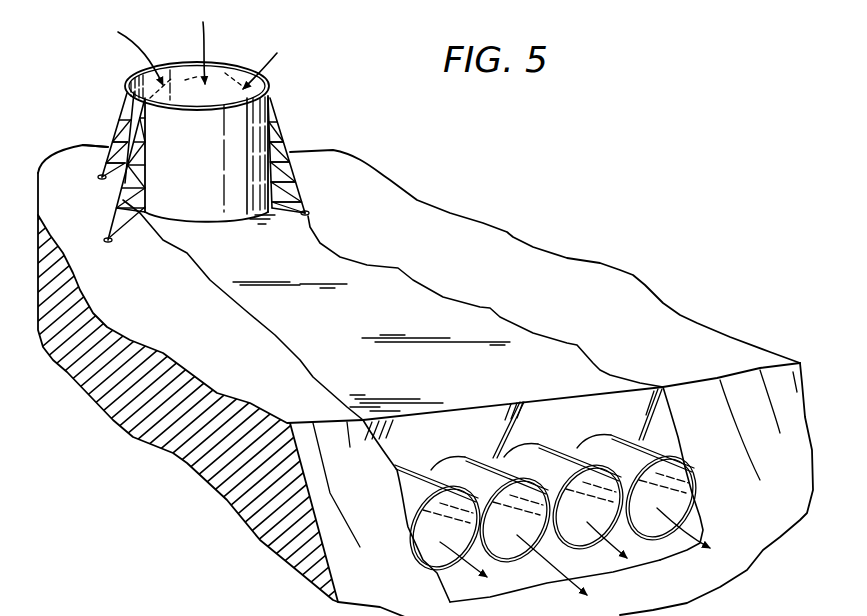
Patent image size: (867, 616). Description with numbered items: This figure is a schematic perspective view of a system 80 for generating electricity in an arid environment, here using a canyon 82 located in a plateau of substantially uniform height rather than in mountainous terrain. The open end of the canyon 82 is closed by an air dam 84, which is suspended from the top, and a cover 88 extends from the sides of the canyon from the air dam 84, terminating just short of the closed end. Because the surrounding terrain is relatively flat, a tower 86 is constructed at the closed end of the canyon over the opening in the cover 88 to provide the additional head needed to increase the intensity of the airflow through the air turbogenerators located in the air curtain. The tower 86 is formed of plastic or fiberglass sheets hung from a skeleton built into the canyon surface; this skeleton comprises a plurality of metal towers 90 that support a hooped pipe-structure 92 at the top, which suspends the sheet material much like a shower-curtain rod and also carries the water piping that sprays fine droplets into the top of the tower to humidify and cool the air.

The system for generating electricity 80 is at (513, 197).
The canyon 82 is at (367, 297).
The air dam 84 is at (622, 412).
The tower 86 is at (250, 120).
The cover 88 is at (540, 352).
The metal towers 90 is at (284, 148).
The hooped pipe-structure 92 is at (247, 72).